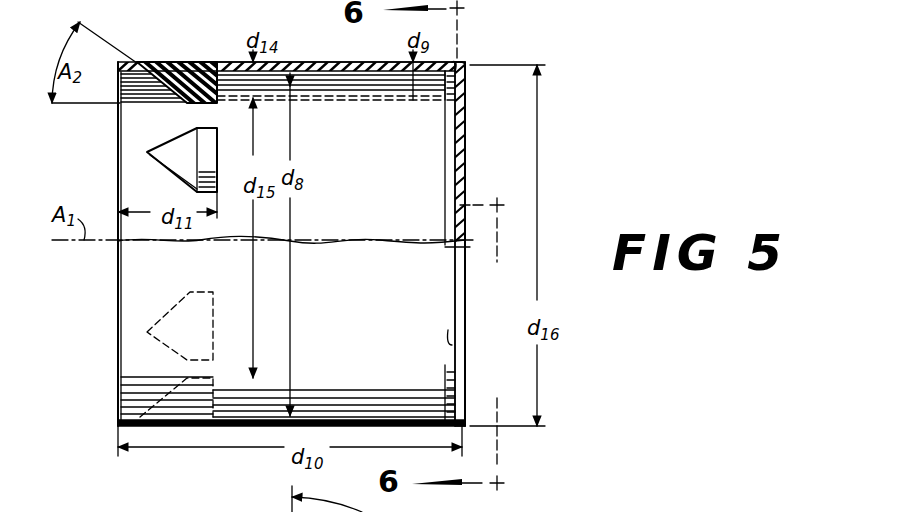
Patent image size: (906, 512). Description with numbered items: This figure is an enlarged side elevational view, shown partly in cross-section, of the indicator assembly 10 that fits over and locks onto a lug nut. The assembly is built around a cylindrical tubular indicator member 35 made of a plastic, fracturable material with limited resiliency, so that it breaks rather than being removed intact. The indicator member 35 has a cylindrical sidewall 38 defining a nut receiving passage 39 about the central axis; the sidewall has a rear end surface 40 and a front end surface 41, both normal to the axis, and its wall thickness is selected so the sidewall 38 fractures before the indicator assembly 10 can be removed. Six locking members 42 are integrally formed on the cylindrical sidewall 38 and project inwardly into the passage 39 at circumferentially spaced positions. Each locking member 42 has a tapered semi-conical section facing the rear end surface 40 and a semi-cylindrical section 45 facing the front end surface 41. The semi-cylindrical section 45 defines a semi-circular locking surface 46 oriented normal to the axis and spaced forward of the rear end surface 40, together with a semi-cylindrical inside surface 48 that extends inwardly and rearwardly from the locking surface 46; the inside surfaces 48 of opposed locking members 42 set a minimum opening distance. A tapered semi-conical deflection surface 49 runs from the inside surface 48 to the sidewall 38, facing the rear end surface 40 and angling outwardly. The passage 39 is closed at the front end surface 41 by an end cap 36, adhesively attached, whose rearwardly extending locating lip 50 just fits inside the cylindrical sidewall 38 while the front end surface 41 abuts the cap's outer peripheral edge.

The indicator assembly 10 is at (286, 227).
The cylindrical tubular indicator member 35 is at (338, 63).
The end cap 36 is at (467, 145).
The cylindrical sidewall 38 is at (380, 63).
The nut receiving passage 39 is at (416, 208).
The rear end surface 40 is at (289, 227).
The front end surface 41 is at (457, 68).
The locking member 42 is at (167, 238).
The semi-cylindrical section 45 is at (216, 193).
The semi-circular locking surface 46 is at (195, 102).
The semi-cylindrical inside surface 48 is at (179, 98).
The tapered semi-conical deflection surface 49 is at (218, 80).
The locating lip 50 is at (453, 74).